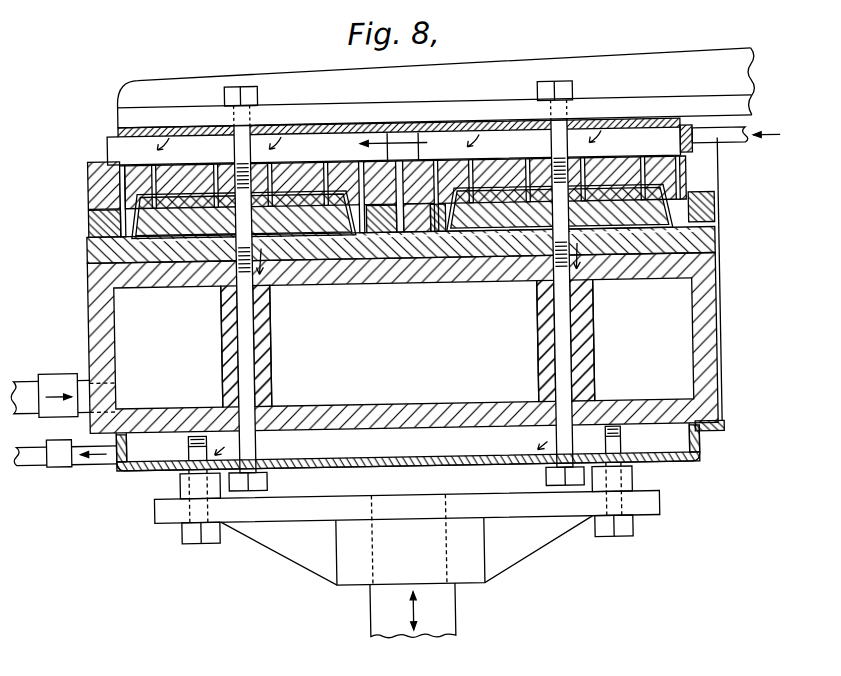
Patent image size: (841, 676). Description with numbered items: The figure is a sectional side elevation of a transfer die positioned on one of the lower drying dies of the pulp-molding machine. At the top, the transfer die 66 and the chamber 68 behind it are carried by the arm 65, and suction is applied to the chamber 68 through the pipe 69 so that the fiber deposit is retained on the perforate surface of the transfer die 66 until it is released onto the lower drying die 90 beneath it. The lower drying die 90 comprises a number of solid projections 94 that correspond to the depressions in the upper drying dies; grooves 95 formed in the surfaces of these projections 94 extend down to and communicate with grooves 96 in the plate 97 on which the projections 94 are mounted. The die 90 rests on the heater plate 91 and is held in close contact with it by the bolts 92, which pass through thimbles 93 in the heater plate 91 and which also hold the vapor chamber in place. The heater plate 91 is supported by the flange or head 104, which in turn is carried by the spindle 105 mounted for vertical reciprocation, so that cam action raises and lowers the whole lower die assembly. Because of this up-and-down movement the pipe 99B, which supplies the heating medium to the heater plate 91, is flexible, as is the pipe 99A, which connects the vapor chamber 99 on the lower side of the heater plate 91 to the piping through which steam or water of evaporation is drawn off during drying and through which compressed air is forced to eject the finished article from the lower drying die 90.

The arm 65 is at (622, 72).
The chamber 68 is at (135, 147).
The pipe 69 is at (725, 143).
The transfer die 66 is at (105, 183).
The grooves 95 is at (89, 213).
The grooves 96 is at (301, 220).
The plate 97 is at (365, 232).
The lower drying die 90 is at (88, 248).
The heater plate 91 is at (118, 317).
The bolts 92 is at (255, 370).
The thimbles 93 is at (268, 326).
The solid projections 94 is at (205, 217).
The vapor chamber 99 is at (147, 451).
The flexible pipe 99A is at (32, 458).
The flexible pipe 99B is at (30, 369).
The flange or head 104 is at (291, 511).
The spindle 105 is at (370, 615).